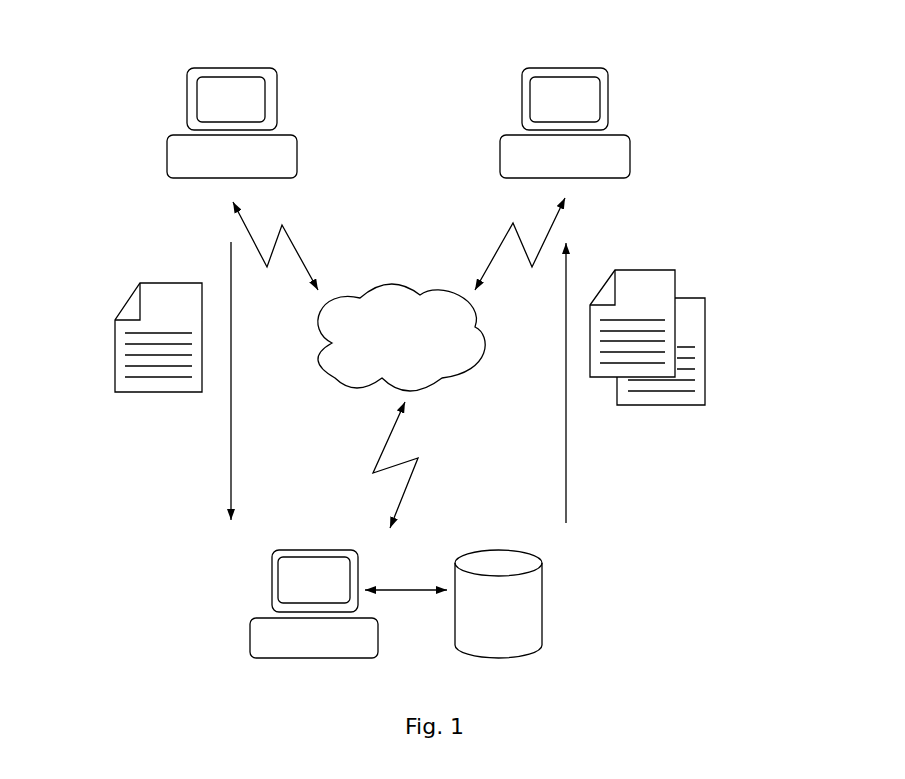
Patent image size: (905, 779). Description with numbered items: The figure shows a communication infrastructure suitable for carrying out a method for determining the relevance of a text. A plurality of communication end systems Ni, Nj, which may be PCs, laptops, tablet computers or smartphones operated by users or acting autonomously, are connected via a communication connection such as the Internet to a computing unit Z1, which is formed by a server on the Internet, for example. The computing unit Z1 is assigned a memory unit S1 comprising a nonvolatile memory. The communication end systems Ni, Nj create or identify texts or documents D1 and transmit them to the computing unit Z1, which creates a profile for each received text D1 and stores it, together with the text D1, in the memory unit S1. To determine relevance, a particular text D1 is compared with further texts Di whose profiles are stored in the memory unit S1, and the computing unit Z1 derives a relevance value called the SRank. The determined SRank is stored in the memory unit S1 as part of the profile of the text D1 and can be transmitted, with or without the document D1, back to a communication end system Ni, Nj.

The communication end system Ni is at (187, 92).
The communication end system Nj is at (612, 92).
The text D1 is at (167, 285).
The SRank value SRank is at (708, 362).
The element Internet is at (332, 385).
The computing unit Z1 is at (268, 580).
The memory unit S1 is at (644, 597).
The further texts Di is at (497, 613).